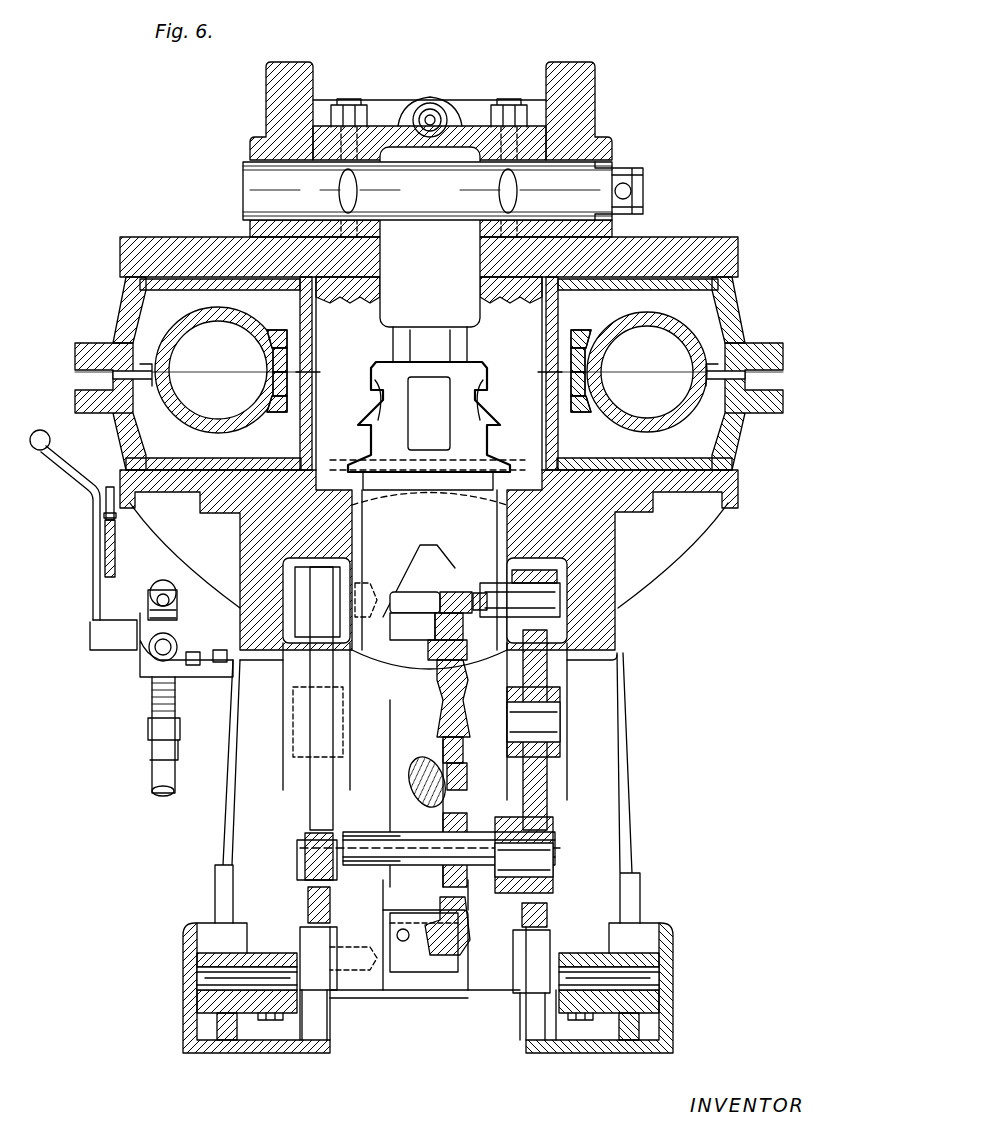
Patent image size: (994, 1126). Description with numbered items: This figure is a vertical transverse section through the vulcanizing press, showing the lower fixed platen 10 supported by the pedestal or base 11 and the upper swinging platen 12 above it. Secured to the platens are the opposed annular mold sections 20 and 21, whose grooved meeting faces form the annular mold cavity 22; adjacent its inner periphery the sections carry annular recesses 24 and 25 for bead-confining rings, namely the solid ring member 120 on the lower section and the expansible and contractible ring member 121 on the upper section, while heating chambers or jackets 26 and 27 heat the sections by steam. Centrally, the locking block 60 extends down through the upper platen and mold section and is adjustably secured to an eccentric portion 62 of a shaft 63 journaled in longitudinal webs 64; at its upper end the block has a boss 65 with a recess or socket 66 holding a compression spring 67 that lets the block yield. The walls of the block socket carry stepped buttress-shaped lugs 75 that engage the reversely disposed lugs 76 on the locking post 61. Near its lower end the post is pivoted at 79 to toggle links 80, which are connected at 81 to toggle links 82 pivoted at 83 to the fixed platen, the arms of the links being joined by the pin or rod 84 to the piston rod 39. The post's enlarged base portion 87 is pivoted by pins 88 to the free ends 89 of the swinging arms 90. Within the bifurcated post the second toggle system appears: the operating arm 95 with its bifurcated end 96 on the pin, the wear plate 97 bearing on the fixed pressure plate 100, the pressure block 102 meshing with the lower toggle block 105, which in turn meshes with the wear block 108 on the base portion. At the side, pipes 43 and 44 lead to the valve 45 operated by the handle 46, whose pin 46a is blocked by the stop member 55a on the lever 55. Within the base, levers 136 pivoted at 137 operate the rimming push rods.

The lower fixed platen 10 is at (725, 480).
The pedestal or base 11 is at (622, 742).
The upper swinging platen 12 is at (725, 255).
The lower mold section 20 is at (725, 440).
The upper mold section 21 is at (735, 312).
The annular mold cavity 22 is at (680, 348).
The annular recess 24 is at (590, 404).
The annular recess 25 is at (584, 332).
The heating chamber or jacket 26 is at (700, 447).
The heating chamber or jacket 27 is at (698, 300).
The piston rod 39 is at (420, 760).
The pipe 43 is at (160, 587).
The pipe 44 is at (152, 768).
The four-way cock or valve 45 is at (140, 650).
The handle 46 is at (70, 466).
The laterally projecting pin 46a is at (104, 517).
The lever 55 is at (104, 562).
The triangular stop member 55a is at (110, 487).
The locking block 60 is at (497, 320).
The locking post 61 is at (429, 579).
The eccentric portion 62 is at (427, 191).
The shaft 63 is at (260, 190).
The longitudinal webs 64 is at (285, 94).
The boss 65 is at (440, 106).
The recess or socket 66 is at (438, 115).
The compression spring 67 is at (425, 105).
The buttress-shaped lugs 75 is at (372, 395).
The buttress-shaped lugs 76 is at (395, 428).
The pivotal connection 79 is at (300, 860).
The toggle links 80 is at (300, 768).
The pivotal connection 81 is at (295, 720).
The toggle links 82 is at (320, 672).
The pivot 83 is at (293, 663).
The pin or rod 84 is at (362, 835).
The enlarged base portion 87 is at (418, 985).
The pins or shafts 88 is at (335, 990).
The free ends 89 is at (322, 1000).
The swinging arms 90 is at (310, 910).
The operating arm 95 is at (426, 785).
The bifurcated free end 96 is at (455, 818).
The wear plate 97 is at (435, 628).
The fixed pressure plate 100 is at (448, 596).
The pressure block 102 is at (462, 748).
The lower toggle block 105 is at (465, 775).
The wear block 108 is at (455, 930).
The solid annular ring member 120 is at (586, 385).
The expansible and contractible ring member 121 is at (586, 358).
The levers 136 is at (268, 1020).
The pivotal support 137 is at (230, 977).